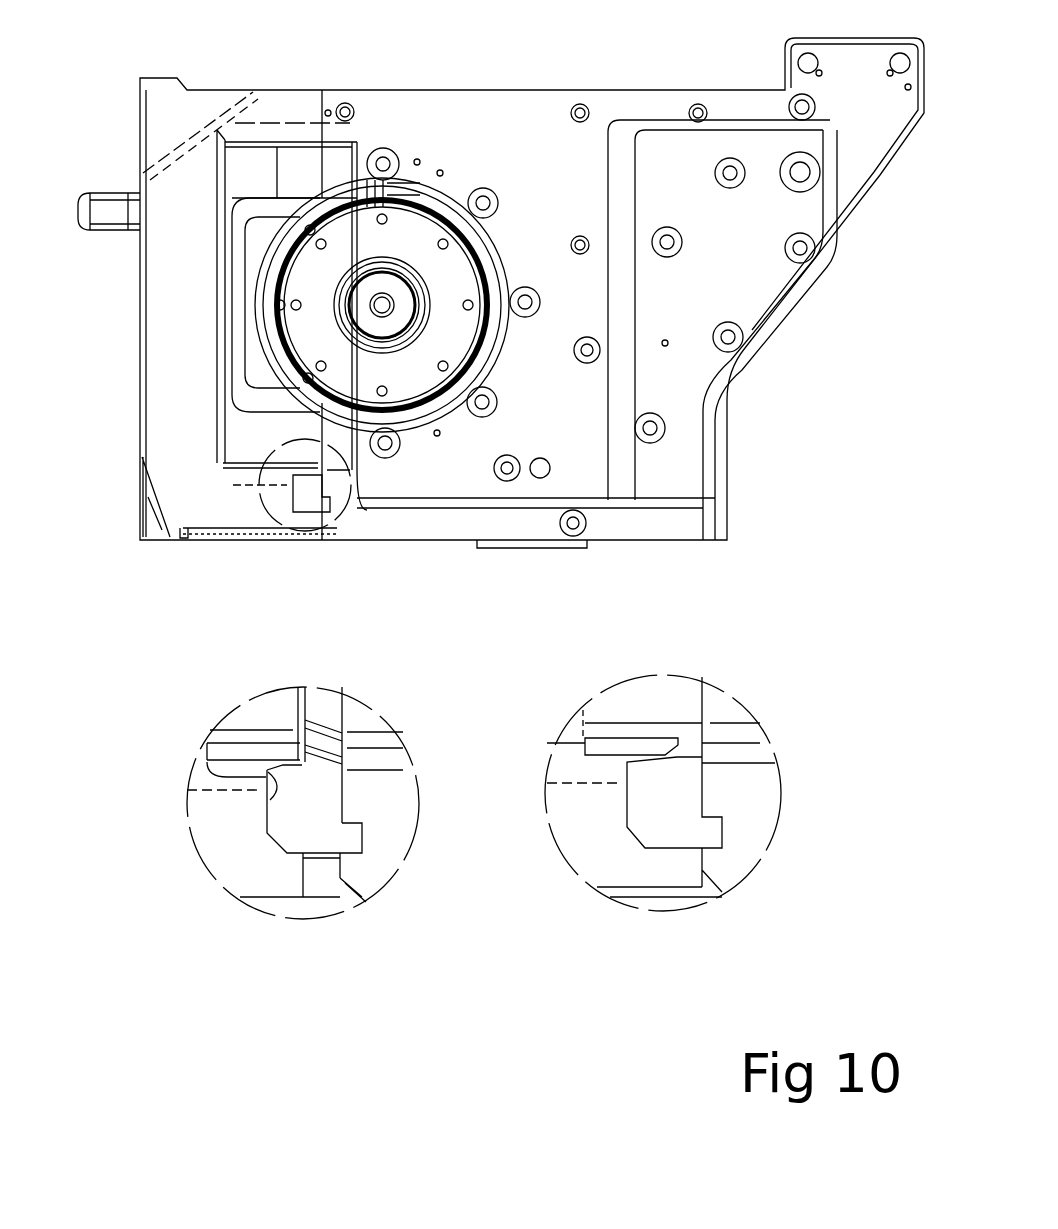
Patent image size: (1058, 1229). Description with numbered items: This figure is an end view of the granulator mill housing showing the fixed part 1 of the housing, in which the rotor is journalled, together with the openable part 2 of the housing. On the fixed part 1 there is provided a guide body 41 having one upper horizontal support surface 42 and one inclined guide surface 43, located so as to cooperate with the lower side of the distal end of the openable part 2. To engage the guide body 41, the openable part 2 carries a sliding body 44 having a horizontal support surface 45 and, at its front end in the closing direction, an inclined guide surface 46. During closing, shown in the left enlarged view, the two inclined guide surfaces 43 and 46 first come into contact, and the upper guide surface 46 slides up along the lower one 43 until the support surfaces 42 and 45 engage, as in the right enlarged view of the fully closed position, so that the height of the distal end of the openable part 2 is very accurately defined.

The fixed part of the mill housing 1 is at (538, 127).
The openable part of the mill housing 2 is at (158, 313).
The guide body 41 is at (308, 490).
The upper horizontal support surface 42 is at (320, 763).
The inclined guide surface 43 is at (267, 812).
The sliding body 44 is at (287, 458).
The horizontal support surface 45 is at (203, 777).
The inclined guide surface 46 is at (293, 756).